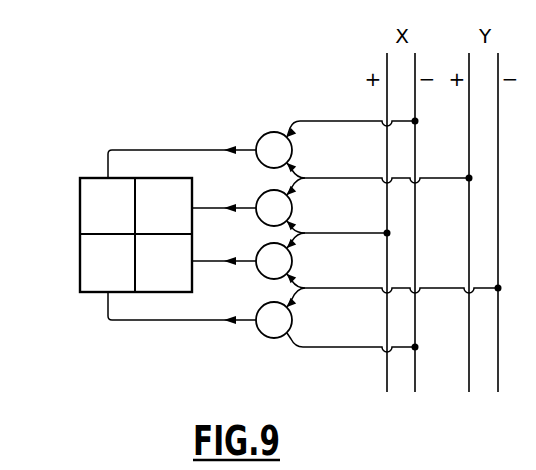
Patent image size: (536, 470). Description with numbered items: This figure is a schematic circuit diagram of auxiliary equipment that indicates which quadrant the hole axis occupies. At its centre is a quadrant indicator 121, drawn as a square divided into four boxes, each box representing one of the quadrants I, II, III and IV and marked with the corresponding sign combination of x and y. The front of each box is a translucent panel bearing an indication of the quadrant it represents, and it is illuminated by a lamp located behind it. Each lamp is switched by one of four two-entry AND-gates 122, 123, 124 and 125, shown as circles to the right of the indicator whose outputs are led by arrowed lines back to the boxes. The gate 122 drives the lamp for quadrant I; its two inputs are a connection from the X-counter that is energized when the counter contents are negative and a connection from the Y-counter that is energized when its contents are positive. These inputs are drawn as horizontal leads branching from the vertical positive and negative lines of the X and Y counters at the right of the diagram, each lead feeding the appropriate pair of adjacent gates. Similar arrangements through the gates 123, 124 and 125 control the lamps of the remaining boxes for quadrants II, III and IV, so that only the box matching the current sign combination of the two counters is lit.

The quadrant indicator 121 is at (80, 236).
The two-entry AND-gate 122 is at (266, 132).
The gate 123 is at (266, 190).
The gate 124 is at (266, 243).
The gate 125 is at (266, 302).
The quadrant I is at (80, 196).
The quadrant II is at (177, 197).
The quadrant III is at (192, 284).
The quadrant IV is at (80, 274).